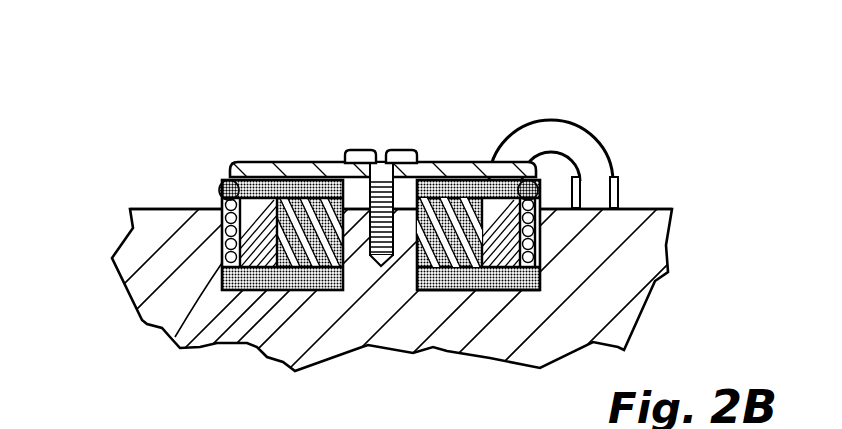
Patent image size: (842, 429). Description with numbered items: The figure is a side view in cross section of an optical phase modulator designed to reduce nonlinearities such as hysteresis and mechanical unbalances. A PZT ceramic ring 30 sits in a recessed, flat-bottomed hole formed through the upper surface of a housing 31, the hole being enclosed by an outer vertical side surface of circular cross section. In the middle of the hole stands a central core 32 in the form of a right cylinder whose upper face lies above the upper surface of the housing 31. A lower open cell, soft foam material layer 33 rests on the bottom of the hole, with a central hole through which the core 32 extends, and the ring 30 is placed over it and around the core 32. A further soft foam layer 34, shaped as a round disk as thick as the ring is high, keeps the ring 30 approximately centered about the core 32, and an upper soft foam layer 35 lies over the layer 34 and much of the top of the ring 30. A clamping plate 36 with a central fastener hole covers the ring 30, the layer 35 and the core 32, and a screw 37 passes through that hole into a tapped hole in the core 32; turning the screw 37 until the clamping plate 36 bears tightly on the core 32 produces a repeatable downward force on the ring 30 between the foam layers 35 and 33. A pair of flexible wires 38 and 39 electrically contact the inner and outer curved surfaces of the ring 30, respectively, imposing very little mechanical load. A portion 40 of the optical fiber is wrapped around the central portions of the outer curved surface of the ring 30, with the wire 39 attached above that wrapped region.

The PZT ceramic ring 30 is at (227, 217).
The housing 31 is at (646, 208).
The central core 32 is at (433, 190).
The lower open cell soft foam material layer 33 is at (472, 290).
The open cell soft foam material layer (round disk) 34 is at (450, 192).
The upper open cell soft foam material layer 35 is at (220, 186).
The clamping plate 36 is at (285, 161).
The screw 37 is at (353, 150).
The flexible wire 38 is at (610, 160).
The flexible wire 39 is at (557, 140).
The optical fiber portion 40 is at (160, 330).